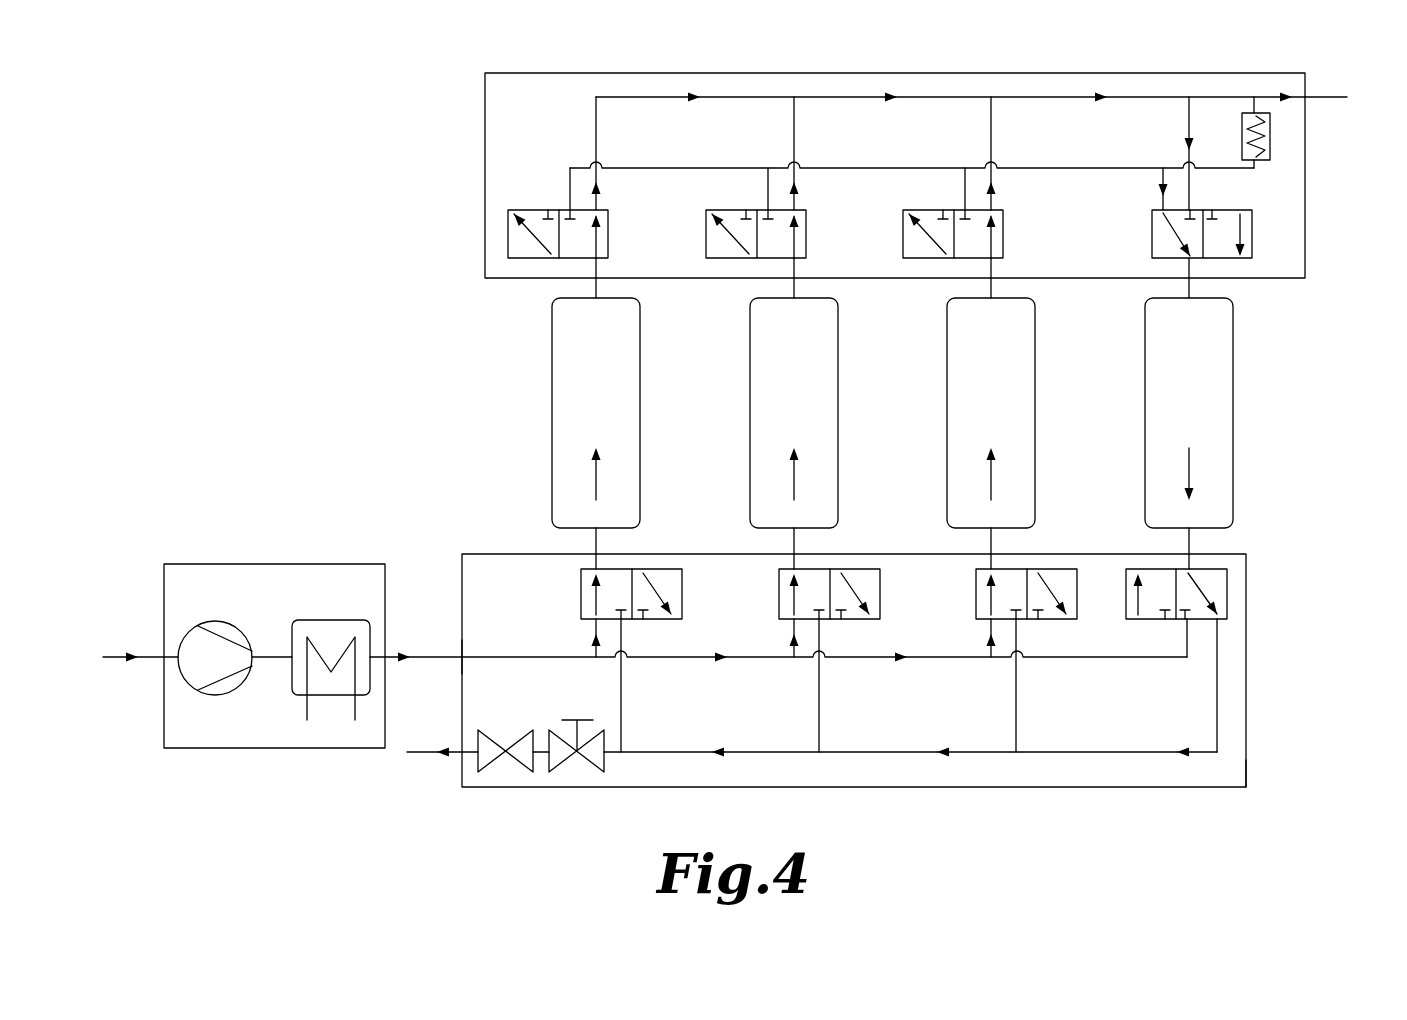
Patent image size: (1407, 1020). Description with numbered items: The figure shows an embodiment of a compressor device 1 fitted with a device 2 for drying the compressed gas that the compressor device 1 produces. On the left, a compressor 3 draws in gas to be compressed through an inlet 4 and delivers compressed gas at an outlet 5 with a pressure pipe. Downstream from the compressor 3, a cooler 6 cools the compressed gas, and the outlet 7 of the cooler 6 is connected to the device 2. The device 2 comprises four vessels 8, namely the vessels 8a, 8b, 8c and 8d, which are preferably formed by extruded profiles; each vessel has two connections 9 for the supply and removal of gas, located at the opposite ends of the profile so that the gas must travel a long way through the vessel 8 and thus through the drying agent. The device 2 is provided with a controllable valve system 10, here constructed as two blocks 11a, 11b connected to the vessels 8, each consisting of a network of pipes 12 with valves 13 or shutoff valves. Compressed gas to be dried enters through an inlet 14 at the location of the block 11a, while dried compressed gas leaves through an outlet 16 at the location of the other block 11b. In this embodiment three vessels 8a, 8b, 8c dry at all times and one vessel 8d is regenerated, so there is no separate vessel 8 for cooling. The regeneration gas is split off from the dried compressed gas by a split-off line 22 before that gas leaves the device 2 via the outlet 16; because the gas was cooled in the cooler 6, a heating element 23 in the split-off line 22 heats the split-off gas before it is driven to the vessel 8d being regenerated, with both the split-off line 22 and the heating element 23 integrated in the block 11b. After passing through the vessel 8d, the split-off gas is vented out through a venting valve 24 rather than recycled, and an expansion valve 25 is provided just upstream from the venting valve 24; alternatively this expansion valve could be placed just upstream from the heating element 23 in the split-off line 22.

The compressor device 1 is at (175, 122).
The device for drying compressed gas 2 is at (1284, 743).
The compressor 3 is at (215, 621).
The inlet 4 is at (118, 655).
The outlet 5 is at (260, 657).
The cooler 6 is at (358, 695).
The outlet of the cooler 7 is at (392, 660).
The vessels 8 is at (505, 429).
The first vessel 8a is at (577, 366).
The second vessel 8b is at (775, 375).
The third vessel 8c is at (972, 375).
The fourth vessel 8d is at (1167, 375).
The connections 9 is at (596, 295).
The controllable valve system 10 is at (1273, 560).
The block 11a is at (462, 787).
The block 11b is at (485, 93).
The pipes 12 is at (836, 97).
The valves 13 is at (508, 245).
The inlet 14 is at (462, 657).
The outlet 16 is at (1308, 97).
The split-off line 22 is at (1067, 168).
The heating element 23 is at (1270, 142).
The venting valve 24 is at (488, 773).
The expansion valve 25 is at (593, 772).